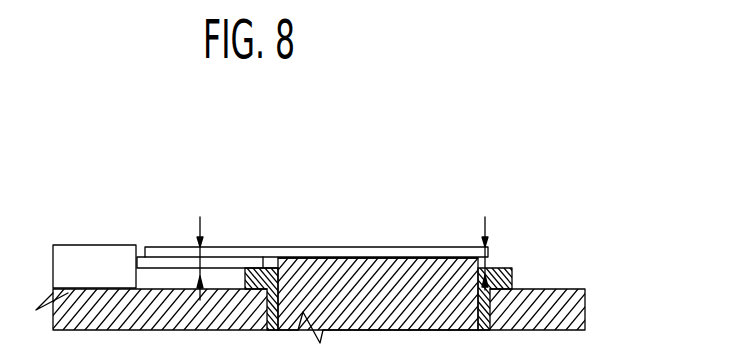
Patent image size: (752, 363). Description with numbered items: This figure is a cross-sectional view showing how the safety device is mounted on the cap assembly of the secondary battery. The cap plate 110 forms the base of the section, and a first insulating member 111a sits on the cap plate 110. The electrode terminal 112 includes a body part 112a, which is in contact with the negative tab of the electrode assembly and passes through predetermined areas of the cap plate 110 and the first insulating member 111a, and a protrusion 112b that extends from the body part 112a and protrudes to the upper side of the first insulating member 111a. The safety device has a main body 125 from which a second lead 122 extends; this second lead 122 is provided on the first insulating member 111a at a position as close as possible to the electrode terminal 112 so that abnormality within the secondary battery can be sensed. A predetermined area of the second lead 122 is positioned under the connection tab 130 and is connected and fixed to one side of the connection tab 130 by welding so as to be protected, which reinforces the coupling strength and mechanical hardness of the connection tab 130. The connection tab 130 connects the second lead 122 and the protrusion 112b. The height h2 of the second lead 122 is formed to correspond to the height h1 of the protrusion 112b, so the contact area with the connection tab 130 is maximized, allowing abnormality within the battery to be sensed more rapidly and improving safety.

The cap plate 110 is at (572, 310).
The first insulating member 111a is at (499, 272).
The electrode terminal 112 is at (408, 223).
The body part 112a is at (398, 300).
The protrusion 112b is at (457, 158).
The second lead 122 is at (172, 258).
The main body 125 is at (105, 258).
The connection tab 130 is at (297, 253).
The height of the protrusion h1 is at (488, 264).
The height of the second lead h2 is at (203, 262).